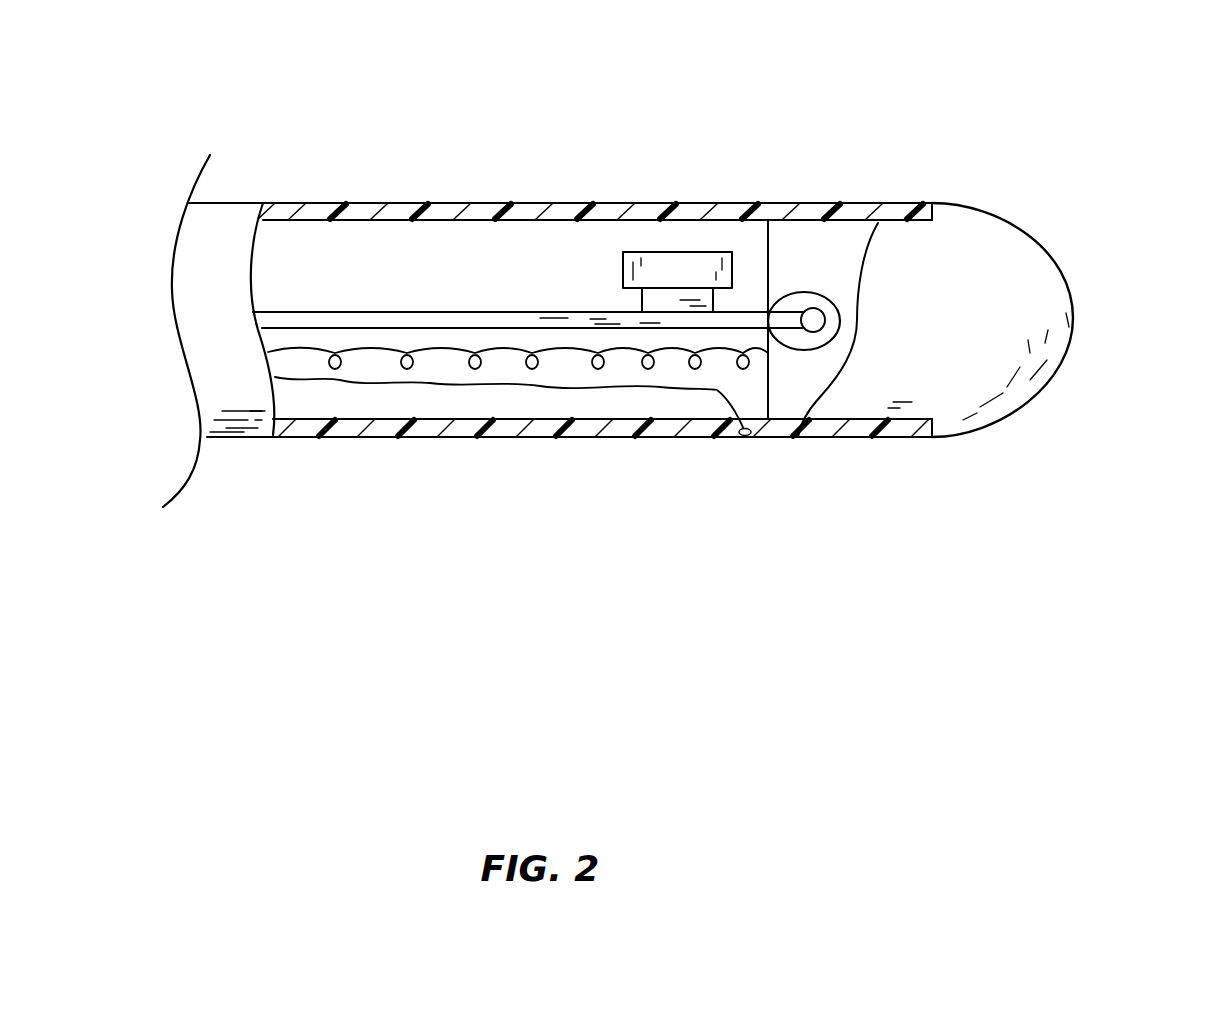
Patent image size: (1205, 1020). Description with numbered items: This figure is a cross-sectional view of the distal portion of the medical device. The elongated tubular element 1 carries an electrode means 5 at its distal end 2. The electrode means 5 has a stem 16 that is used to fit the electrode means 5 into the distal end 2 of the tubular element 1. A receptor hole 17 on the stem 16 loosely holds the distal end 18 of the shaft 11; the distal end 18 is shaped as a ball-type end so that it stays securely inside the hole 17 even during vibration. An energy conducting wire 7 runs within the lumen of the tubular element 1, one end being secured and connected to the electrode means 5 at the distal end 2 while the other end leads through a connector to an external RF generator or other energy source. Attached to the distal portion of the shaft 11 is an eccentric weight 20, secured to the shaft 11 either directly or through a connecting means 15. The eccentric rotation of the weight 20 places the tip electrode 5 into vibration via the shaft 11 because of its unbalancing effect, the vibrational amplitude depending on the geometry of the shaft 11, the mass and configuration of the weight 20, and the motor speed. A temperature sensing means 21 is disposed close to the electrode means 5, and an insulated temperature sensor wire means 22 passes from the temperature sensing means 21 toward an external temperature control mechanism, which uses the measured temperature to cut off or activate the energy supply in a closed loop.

The elongated tubular element 1 is at (455, 198).
The distal end 2 is at (932, 199).
The electrode means 5 is at (1050, 238).
The energy conducting wire 7 is at (505, 355).
The shaft 11 is at (438, 320).
The connecting means 15 is at (663, 293).
The stem 16 is at (785, 397).
The receptor hole 17 is at (797, 300).
The distal end of the shaft 18 is at (812, 325).
The eccentric weight 20 is at (685, 265).
The temperature sensing means 21 is at (743, 441).
The insulated temperature sensor wire means 22 is at (587, 393).